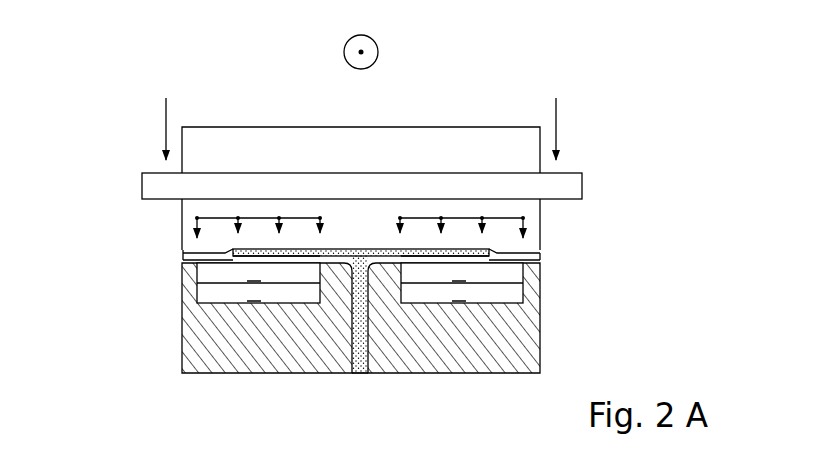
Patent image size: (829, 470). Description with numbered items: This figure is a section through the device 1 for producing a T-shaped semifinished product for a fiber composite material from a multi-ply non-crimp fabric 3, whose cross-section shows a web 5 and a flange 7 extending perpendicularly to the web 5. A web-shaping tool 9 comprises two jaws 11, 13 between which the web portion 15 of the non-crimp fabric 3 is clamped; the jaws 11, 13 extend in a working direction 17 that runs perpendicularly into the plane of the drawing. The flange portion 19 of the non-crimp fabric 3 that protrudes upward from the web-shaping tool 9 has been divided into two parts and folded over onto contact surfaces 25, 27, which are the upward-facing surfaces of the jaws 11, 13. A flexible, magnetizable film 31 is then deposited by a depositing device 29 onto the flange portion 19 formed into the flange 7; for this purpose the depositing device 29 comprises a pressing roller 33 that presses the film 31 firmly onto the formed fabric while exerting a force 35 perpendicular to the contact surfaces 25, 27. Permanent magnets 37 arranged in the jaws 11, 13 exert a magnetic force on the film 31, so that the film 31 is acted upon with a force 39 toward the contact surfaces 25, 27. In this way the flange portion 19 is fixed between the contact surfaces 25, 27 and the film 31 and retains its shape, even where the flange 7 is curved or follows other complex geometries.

The device 1 is at (92, 72).
The non-crimp fabric 3 is at (363, 374).
The web 5 is at (357, 374).
The flange 7 is at (478, 260).
The web-shaping tool 9 is at (110, 230).
The jaw 11 is at (182, 337).
The jaw 13 is at (540, 340).
The web portion 15 is at (352, 345).
The working direction 17 is at (361, 52).
The flange portion 19 is at (277, 263).
The contact surface 25 is at (183, 258).
The contact surface 27 is at (538, 256).
The depositing device 29 is at (468, 103).
The magnetizable film 31 is at (538, 255).
The pressing roller 33 is at (251, 127).
The force 35 is at (164, 137).
The permanent magnets 37 is at (213, 293).
The force 39 is at (197, 217).